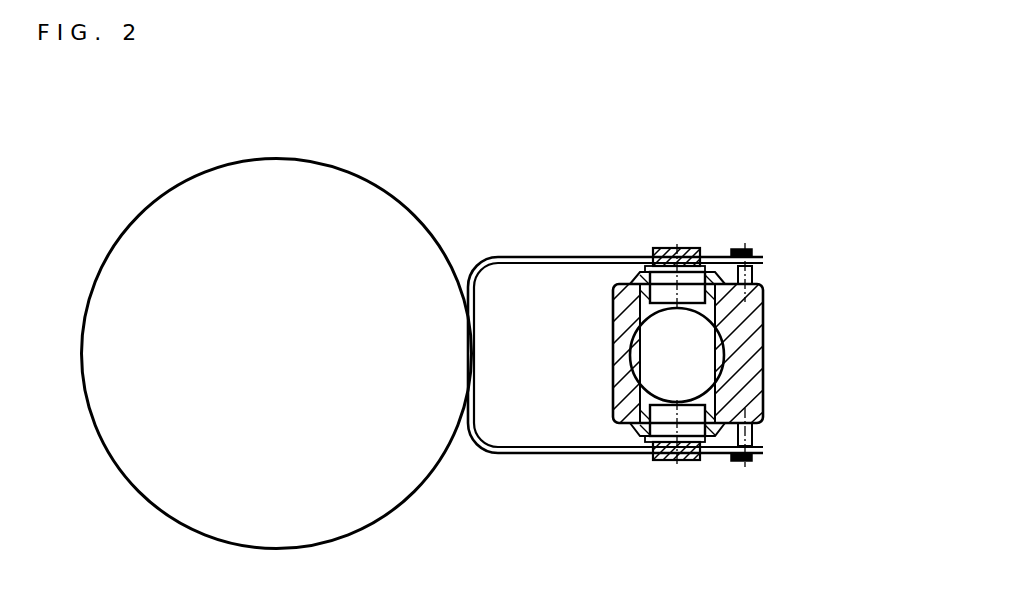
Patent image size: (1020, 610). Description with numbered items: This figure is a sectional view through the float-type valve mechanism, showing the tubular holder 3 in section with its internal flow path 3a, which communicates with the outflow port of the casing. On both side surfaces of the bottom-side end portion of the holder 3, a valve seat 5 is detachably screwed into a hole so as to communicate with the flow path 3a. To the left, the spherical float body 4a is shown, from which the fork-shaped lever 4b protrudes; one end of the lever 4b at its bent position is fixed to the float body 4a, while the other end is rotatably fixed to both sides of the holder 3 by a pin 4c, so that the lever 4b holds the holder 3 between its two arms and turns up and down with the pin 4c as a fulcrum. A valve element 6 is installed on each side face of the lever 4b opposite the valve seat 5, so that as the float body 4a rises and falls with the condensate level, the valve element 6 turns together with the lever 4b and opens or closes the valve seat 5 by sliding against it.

The holder 3 is at (760, 333).
The flow path 3a is at (692, 357).
The float body 4a is at (183, 232).
The lever 4b is at (547, 258).
The pin 4c is at (740, 252).
The valve seat 5 is at (630, 258).
The valve element 6 is at (680, 257).